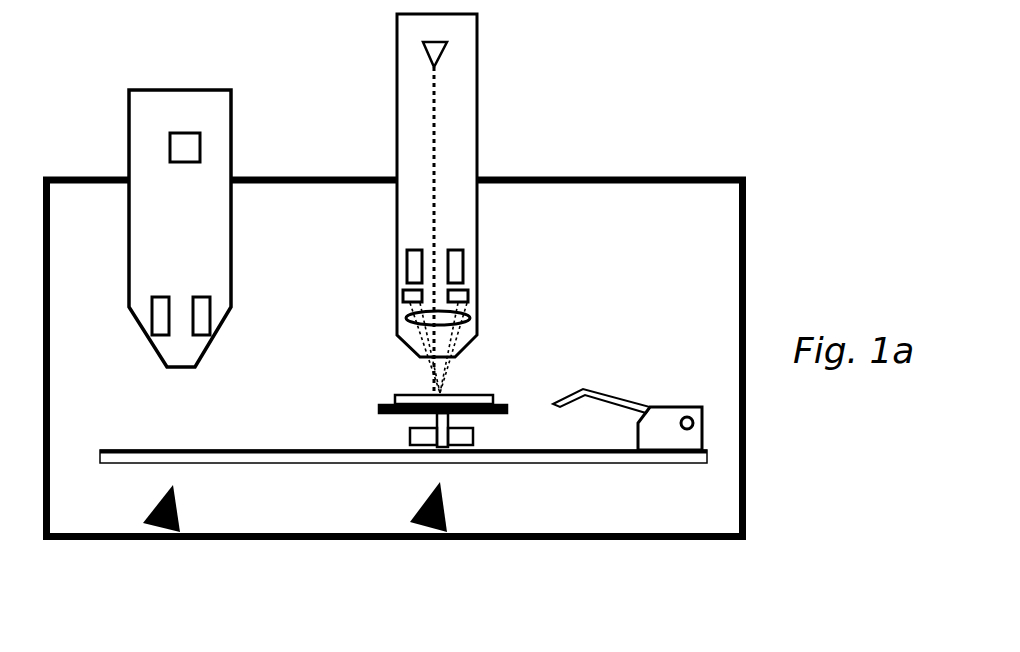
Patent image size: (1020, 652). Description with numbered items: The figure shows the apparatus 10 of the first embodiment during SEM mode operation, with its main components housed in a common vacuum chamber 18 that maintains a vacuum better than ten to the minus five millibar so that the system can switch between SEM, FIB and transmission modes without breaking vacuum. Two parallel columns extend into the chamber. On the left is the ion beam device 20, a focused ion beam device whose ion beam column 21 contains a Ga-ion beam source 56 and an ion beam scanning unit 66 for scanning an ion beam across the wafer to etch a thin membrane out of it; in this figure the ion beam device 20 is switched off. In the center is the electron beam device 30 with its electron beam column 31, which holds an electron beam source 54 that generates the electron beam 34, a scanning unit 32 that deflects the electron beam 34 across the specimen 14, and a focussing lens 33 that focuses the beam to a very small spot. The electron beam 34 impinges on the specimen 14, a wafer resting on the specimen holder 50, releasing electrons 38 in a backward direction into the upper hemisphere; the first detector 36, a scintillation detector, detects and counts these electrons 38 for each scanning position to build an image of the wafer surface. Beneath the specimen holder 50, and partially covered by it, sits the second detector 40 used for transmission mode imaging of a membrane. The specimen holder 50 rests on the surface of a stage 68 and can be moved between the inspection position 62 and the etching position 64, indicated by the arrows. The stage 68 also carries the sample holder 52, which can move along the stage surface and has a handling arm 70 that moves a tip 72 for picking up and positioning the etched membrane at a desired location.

The apparatus 10 is at (810, 60).
The specimen 14 is at (407, 397).
The vacuum chamber 18 is at (632, 177).
The ion beam device 20 is at (93, 90).
The ion beam column 21 is at (231, 148).
The electron beam device 30 is at (333, 80).
The electron beam column 31 is at (477, 103).
The scanning unit 32 is at (463, 262).
The focussing lens 33 is at (470, 318).
The electron beam 34 is at (436, 140).
The first detector 36 is at (468, 296).
The electrons 38 is at (397, 335).
The second detector 40 is at (473, 430).
The specimen holder 50 is at (378, 407).
The sample holder 52 is at (677, 348).
The electron beam source 54 is at (447, 45).
The Ga-ion beam source 56 is at (192, 133).
The inspection position 62 is at (440, 537).
The etching position 64 is at (173, 540).
The ion beam scanning unit 66 is at (205, 306).
The stage 68 is at (598, 453).
The handling arm 70 is at (632, 397).
The tip 72 is at (560, 397).